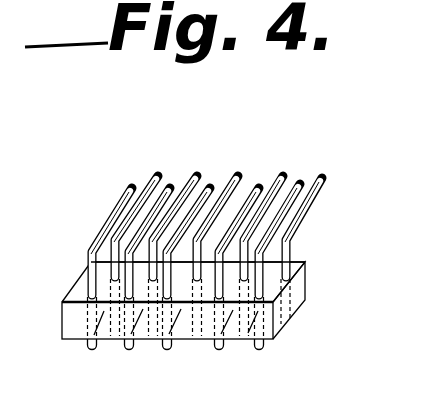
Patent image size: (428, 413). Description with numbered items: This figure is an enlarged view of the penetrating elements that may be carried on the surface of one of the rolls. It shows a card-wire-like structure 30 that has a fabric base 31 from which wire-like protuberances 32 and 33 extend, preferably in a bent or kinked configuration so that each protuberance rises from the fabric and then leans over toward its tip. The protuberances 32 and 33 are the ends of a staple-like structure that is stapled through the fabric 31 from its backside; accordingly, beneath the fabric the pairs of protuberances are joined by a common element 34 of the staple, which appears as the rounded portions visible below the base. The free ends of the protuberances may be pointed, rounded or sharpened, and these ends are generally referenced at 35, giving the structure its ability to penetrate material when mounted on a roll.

The card-wire-like structure 30 is at (305, 262).
The fabric base 31 is at (75, 326).
The wire-like protuberance 32 is at (210, 214).
The wire-like protuberance 33 is at (156, 179).
The common element 34 is at (96, 351).
The sharpened end 35 is at (326, 176).